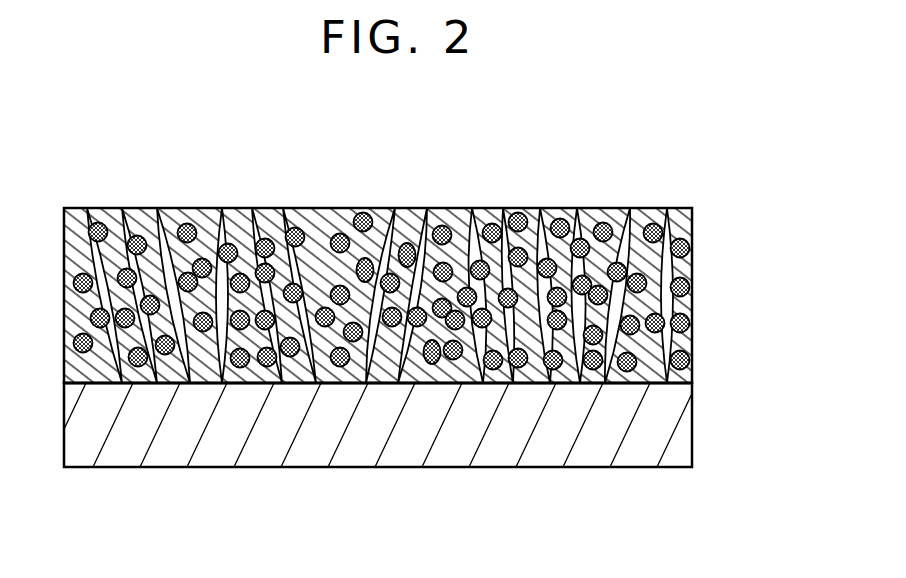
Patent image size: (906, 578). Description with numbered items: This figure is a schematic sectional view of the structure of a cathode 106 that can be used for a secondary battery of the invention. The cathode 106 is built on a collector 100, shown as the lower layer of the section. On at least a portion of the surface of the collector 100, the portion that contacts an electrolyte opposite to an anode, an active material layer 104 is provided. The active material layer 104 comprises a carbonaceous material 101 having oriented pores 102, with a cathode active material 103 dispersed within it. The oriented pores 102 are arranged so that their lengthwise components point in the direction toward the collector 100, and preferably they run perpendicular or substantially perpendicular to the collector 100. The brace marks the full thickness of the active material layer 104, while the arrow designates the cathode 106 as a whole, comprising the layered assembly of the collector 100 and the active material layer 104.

The collector 100 is at (300, 453).
The carbonaceous material 101 is at (203, 210).
The oriented pores 102 is at (327, 210).
The cathode active material 103 is at (367, 213).
The active material layer 104 is at (417, 252).
The cathode 106 is at (706, 417).